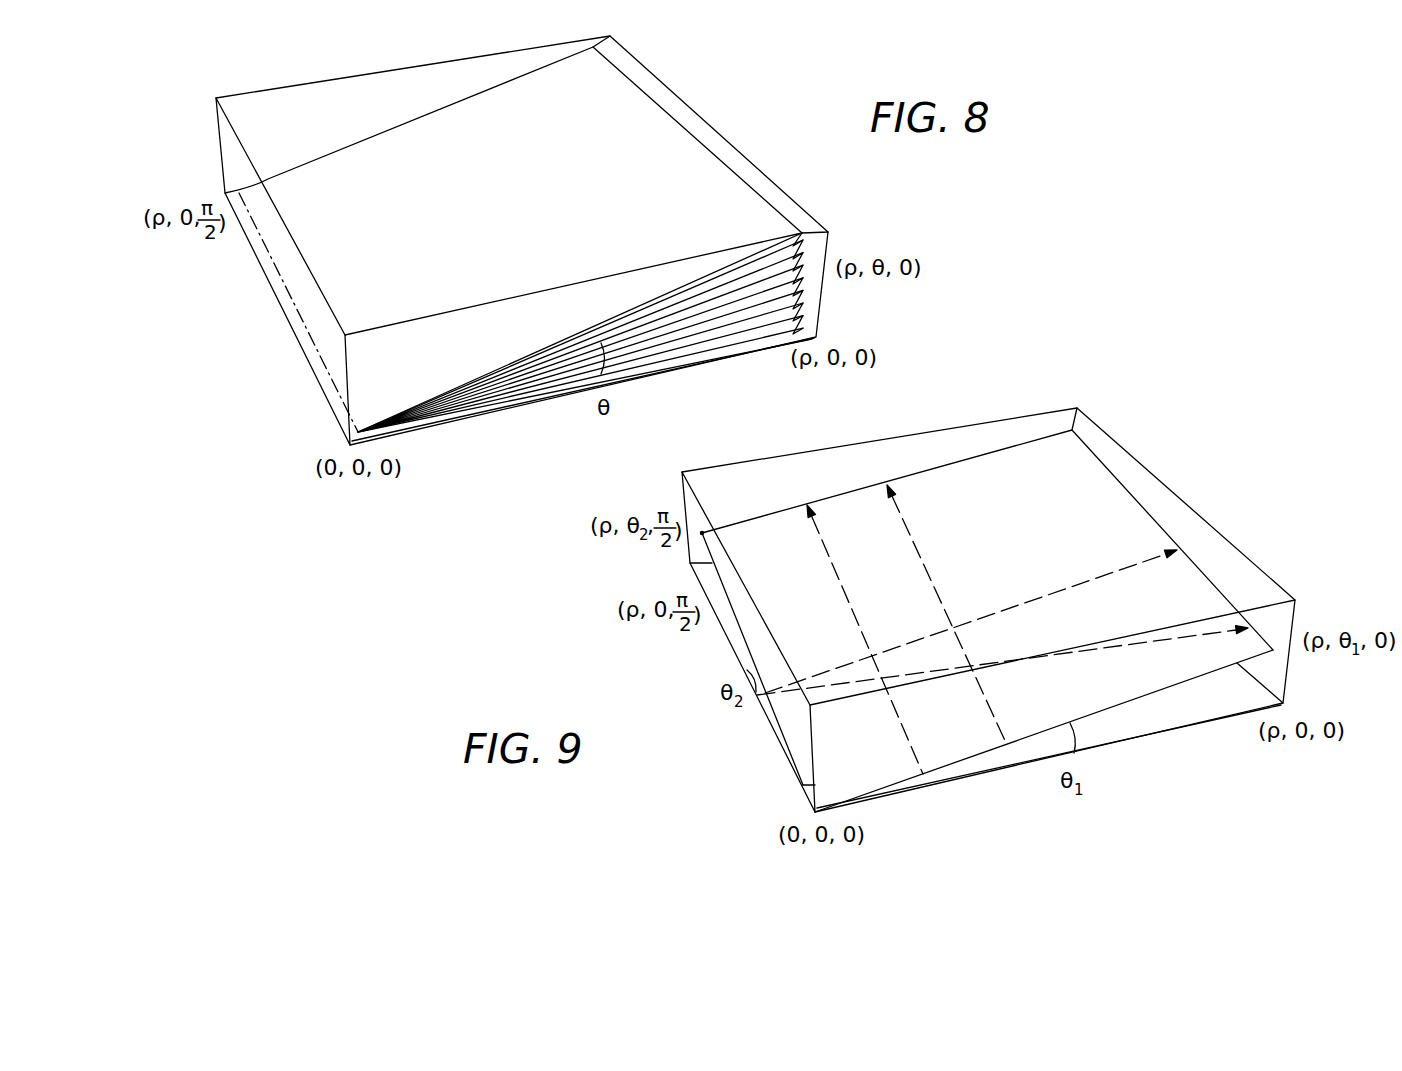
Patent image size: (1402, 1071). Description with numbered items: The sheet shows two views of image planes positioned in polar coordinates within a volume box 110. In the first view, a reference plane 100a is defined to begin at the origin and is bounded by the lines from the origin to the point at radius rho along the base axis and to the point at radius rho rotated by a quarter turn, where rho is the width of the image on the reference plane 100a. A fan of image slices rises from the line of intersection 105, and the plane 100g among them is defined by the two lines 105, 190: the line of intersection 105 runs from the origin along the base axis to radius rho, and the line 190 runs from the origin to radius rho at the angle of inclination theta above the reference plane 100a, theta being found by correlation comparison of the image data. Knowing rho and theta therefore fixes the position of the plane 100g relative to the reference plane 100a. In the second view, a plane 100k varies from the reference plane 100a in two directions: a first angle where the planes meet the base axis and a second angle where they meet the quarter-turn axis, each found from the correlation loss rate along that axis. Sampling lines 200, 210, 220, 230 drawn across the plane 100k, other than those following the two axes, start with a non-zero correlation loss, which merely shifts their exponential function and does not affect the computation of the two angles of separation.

In FIG. 8, the volume box 110 is at (673, 92).
In FIG. 9, the volume box 110 is at (1139, 462).
In FIG. 8, the line of intersection 105 is at (318, 362).
In FIG. 8, the plane 100g is at (803, 255).
In FIG. 8, the line 190 is at (690, 310).
In FIG. 8, the reference plane 100a is at (507, 402).
In FIG. 9, the reference plane 100a is at (1000, 773).
In FIG. 9, the plane 100k is at (1137, 500).
In FIG. 9, the sampling line 200 is at (1253, 623).
In FIG. 9, the sampling line 210 is at (1180, 548).
In FIG. 9, the sampling line 220 is at (806, 503).
In FIG. 9, the sampling line 230 is at (886, 483).